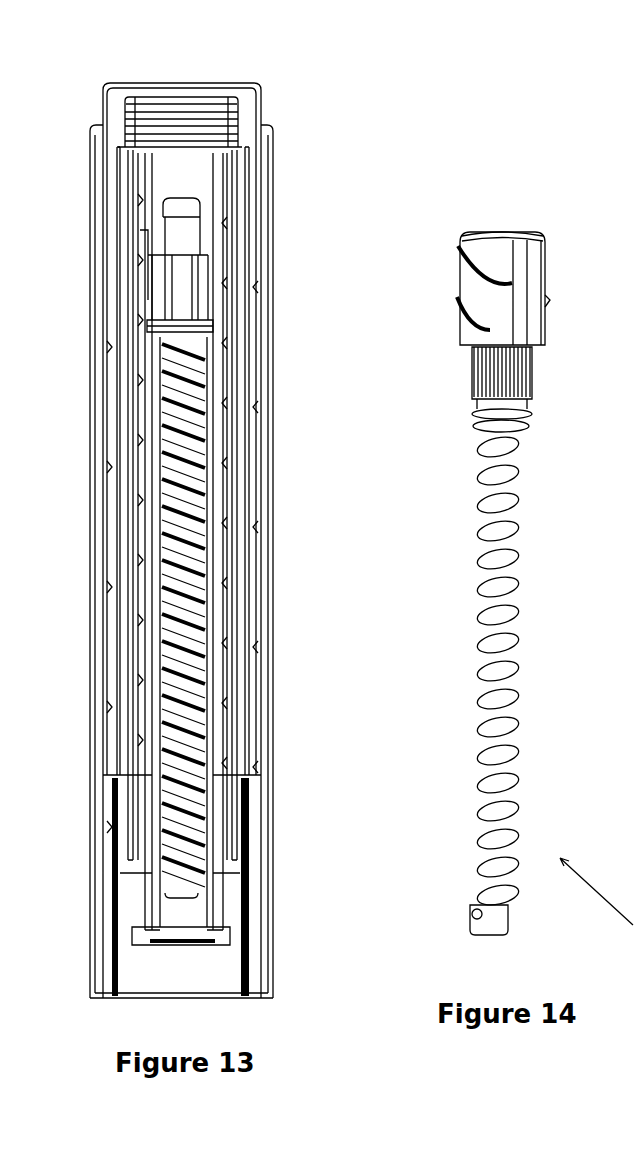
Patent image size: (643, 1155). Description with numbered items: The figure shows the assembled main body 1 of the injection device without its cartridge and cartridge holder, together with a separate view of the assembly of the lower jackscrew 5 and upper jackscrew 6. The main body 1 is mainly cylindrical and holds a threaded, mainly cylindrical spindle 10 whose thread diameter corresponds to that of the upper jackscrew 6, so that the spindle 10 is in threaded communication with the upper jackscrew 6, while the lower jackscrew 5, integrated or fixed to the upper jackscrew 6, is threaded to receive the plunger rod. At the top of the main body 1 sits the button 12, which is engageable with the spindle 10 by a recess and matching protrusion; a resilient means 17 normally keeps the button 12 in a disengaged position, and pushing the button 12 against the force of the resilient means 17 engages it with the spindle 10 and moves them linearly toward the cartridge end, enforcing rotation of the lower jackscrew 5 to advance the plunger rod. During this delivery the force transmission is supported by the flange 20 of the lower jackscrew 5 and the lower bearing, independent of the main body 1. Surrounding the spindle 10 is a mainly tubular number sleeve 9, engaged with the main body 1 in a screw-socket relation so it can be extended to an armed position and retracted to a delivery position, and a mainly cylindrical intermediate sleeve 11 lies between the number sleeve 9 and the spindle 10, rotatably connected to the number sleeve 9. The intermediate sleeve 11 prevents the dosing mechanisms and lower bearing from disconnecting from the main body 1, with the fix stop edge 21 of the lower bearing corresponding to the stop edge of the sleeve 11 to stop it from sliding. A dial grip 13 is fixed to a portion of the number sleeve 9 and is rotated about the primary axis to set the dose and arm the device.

In FIG. 13, the main body 1 is at (275, 413).
In FIG. 13, the lower jackscrew 5 is at (185, 291).
In FIG. 14, the lower jackscrew 5 is at (495, 770).
In FIG. 13, the upper jackscrew 6 is at (215, 240).
In FIG. 14, the upper jackscrew 6 is at (520, 258).
In FIG. 13, the number sleeve 9 is at (257, 347).
In FIG. 13, the spindle 10 is at (232, 540).
In FIG. 13, the intermediate sleeve 11 is at (245, 480).
In FIG. 13, the button 12 is at (218, 88).
In FIG. 13, the dial grip 13 is at (273, 156).
In FIG. 13, the resilient means 17 is at (205, 125).
In FIG. 13, the flange 20 is at (162, 333).
In FIG. 13, the fix stop edge 21 is at (148, 268).